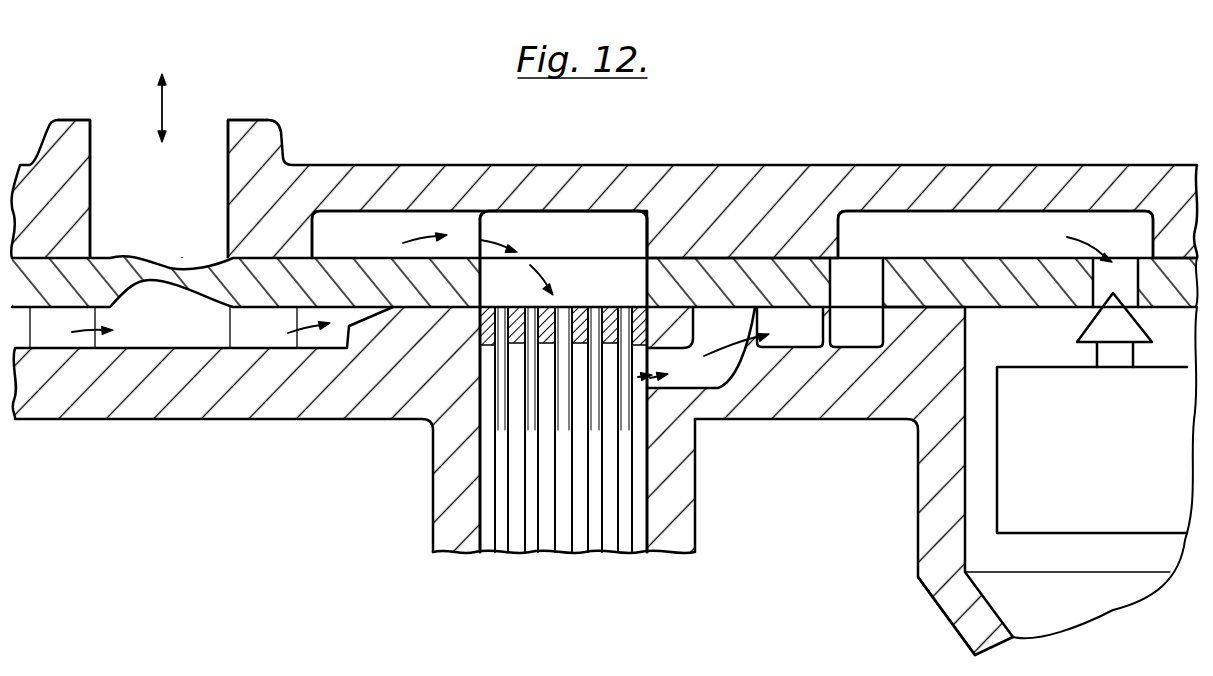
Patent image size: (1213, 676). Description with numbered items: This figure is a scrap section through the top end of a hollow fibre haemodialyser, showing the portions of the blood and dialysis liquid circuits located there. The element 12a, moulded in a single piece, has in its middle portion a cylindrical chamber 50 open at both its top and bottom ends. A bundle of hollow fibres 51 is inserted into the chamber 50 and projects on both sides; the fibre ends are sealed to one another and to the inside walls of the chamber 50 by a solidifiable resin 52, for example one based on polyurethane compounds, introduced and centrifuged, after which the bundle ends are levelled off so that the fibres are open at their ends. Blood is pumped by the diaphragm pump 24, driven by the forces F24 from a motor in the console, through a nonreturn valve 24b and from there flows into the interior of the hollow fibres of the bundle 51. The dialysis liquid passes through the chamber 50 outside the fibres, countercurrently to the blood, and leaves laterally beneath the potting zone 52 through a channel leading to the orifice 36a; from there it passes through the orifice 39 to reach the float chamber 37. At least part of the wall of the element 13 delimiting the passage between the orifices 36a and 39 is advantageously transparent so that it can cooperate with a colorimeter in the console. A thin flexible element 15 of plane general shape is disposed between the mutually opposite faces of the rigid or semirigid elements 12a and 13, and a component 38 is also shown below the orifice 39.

The element 13 is at (815, 187).
The flexible element 15 is at (707, 280).
The element 12a is at (280, 407).
The diaphragm pump 24 is at (203, 137).
The nonreturn valve 24b is at (385, 270).
The orifice 36a is at (872, 260).
The float chamber 37 is at (957, 607).
The box 38 is at (1110, 517).
The orifice 39 is at (1125, 267).
The cylindrical chamber 50 is at (685, 502).
The bundle of hollow fibres 51 is at (530, 478).
The solidifiable resin 52 is at (580, 313).
The forces F24 is at (163, 90).